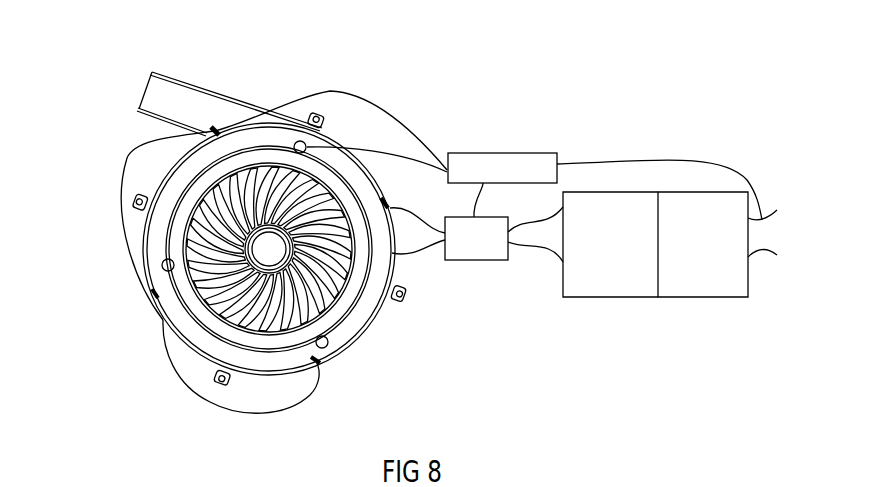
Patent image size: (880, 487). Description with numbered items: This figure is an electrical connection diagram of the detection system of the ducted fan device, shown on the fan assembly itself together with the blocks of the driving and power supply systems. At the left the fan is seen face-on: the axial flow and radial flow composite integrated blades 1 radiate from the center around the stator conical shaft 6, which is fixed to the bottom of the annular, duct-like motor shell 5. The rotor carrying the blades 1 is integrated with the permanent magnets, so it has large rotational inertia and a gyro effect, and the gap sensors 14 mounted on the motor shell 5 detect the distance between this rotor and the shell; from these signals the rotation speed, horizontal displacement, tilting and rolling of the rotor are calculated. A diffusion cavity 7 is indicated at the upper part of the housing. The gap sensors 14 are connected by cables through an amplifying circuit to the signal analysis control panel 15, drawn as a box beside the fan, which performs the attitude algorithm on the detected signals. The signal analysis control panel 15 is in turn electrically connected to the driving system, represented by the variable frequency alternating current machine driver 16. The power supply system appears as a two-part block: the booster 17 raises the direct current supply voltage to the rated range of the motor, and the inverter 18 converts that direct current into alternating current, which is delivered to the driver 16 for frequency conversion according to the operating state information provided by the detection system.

The axial flow and radial flow composite integrated blade 1 is at (217, 214).
The motor shell 5 is at (340, 325).
The stator conical shaft 6 is at (275, 255).
The diffusion cavity 7 is at (167, 103).
The gap sensor 14 is at (155, 295).
The signal analysis control panel 15 is at (468, 170).
The variable frequency alternating current machine driver 16 is at (452, 253).
The booster 17 is at (615, 283).
The inverter 18 is at (705, 285).